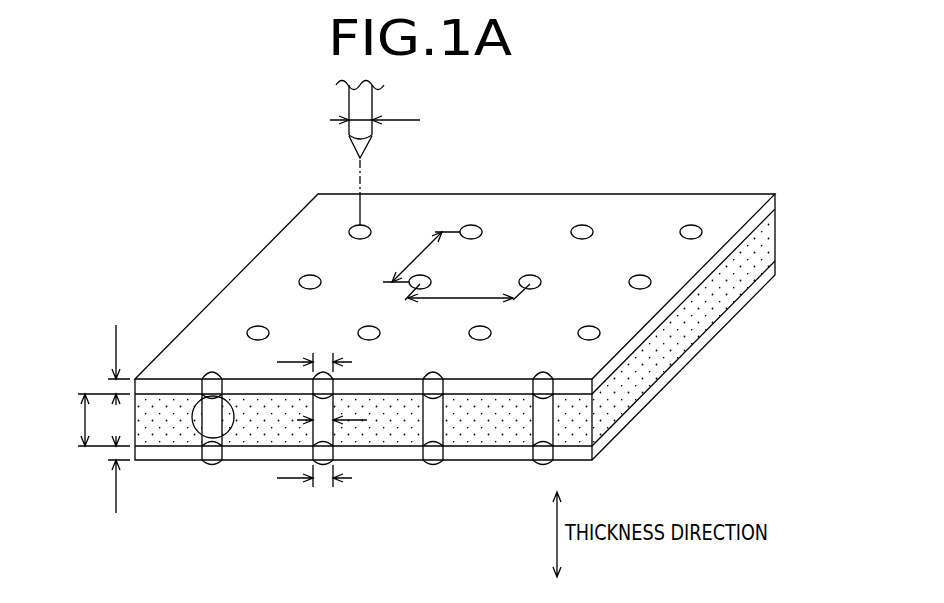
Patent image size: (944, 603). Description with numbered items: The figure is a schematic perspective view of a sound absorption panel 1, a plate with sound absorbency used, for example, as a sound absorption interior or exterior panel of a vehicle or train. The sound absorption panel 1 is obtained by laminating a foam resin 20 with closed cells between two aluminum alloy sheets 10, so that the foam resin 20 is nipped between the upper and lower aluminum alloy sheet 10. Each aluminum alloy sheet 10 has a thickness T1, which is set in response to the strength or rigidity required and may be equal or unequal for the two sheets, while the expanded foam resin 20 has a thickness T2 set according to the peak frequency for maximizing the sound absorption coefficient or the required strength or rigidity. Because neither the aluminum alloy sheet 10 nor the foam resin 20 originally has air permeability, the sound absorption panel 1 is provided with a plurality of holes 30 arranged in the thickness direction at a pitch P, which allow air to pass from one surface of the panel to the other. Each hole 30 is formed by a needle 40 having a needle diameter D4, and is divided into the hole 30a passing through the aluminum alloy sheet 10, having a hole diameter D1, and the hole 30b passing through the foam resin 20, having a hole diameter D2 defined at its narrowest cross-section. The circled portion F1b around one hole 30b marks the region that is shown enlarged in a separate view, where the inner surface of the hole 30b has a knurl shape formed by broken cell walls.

The sound absorption panel 1 is at (455, 327).
The aluminum alloy sheet 10 is at (582, 357).
The foam resin 20 is at (582, 418).
The hole 30 is at (479, 229).
The hole of the aluminum alloy sheet 30a is at (433, 372).
The hole of the foam resin 30b is at (433, 427).
The needle 40 is at (358, 103).
The portion F1b is at (187, 427).
The hole diameter of the hole 30a D1 is at (312, 419).
The hole diameter of the hole 30b D2 is at (357, 423).
The needle diameter D4 is at (375, 108).
The pitch P is at (456, 267).
The thickness of the aluminum alloy sheet T1 is at (106, 420).
The thickness of the foam resin T2 is at (89, 420).